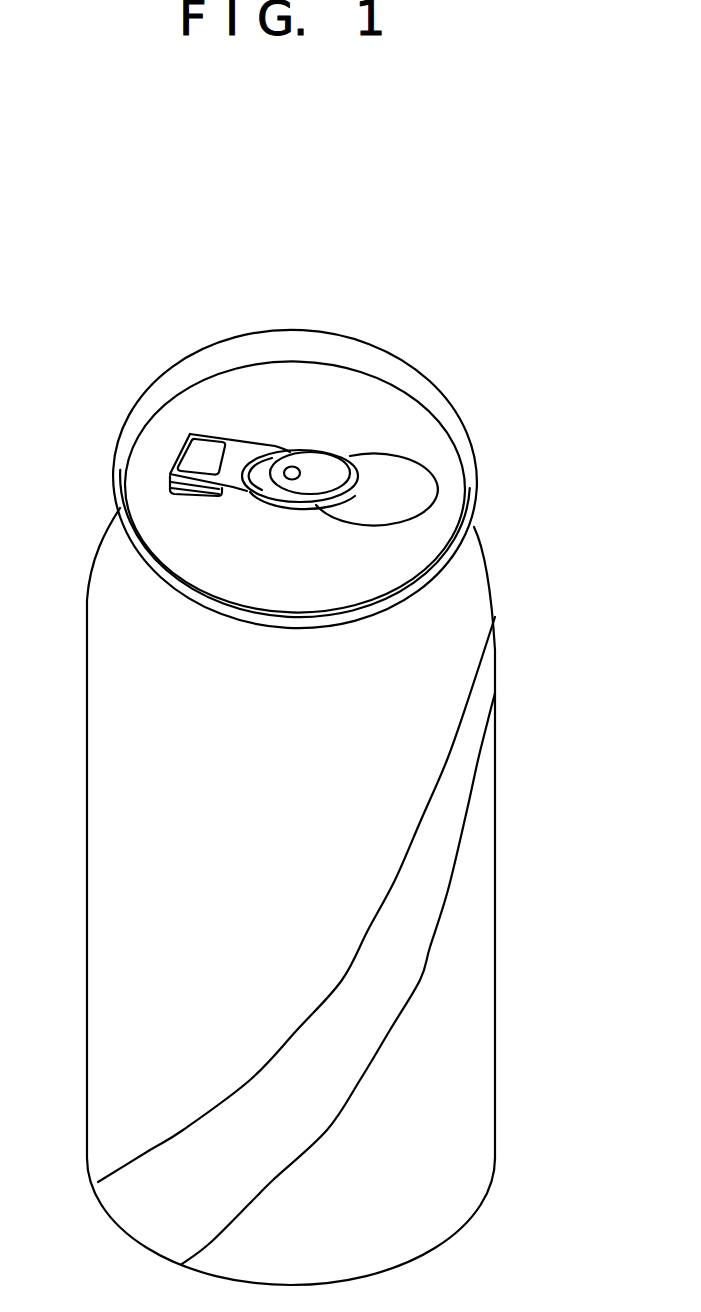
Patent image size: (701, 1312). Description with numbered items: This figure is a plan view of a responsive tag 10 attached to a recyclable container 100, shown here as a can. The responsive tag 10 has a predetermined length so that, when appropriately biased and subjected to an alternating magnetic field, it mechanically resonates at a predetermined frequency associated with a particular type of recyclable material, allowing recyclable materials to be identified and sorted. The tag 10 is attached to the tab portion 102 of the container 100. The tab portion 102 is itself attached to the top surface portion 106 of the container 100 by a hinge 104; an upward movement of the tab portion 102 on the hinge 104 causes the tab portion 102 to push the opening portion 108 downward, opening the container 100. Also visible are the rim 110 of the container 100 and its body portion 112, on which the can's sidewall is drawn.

The responsive tag 10 is at (164, 483).
The recyclable container 100 is at (497, 948).
The tab portion 102 is at (247, 448).
The hinge 104 is at (330, 468).
The top surface portion 106 is at (395, 425).
The opening portion 108 is at (412, 482).
The rim 110 is at (477, 488).
The body portion 112 is at (492, 587).